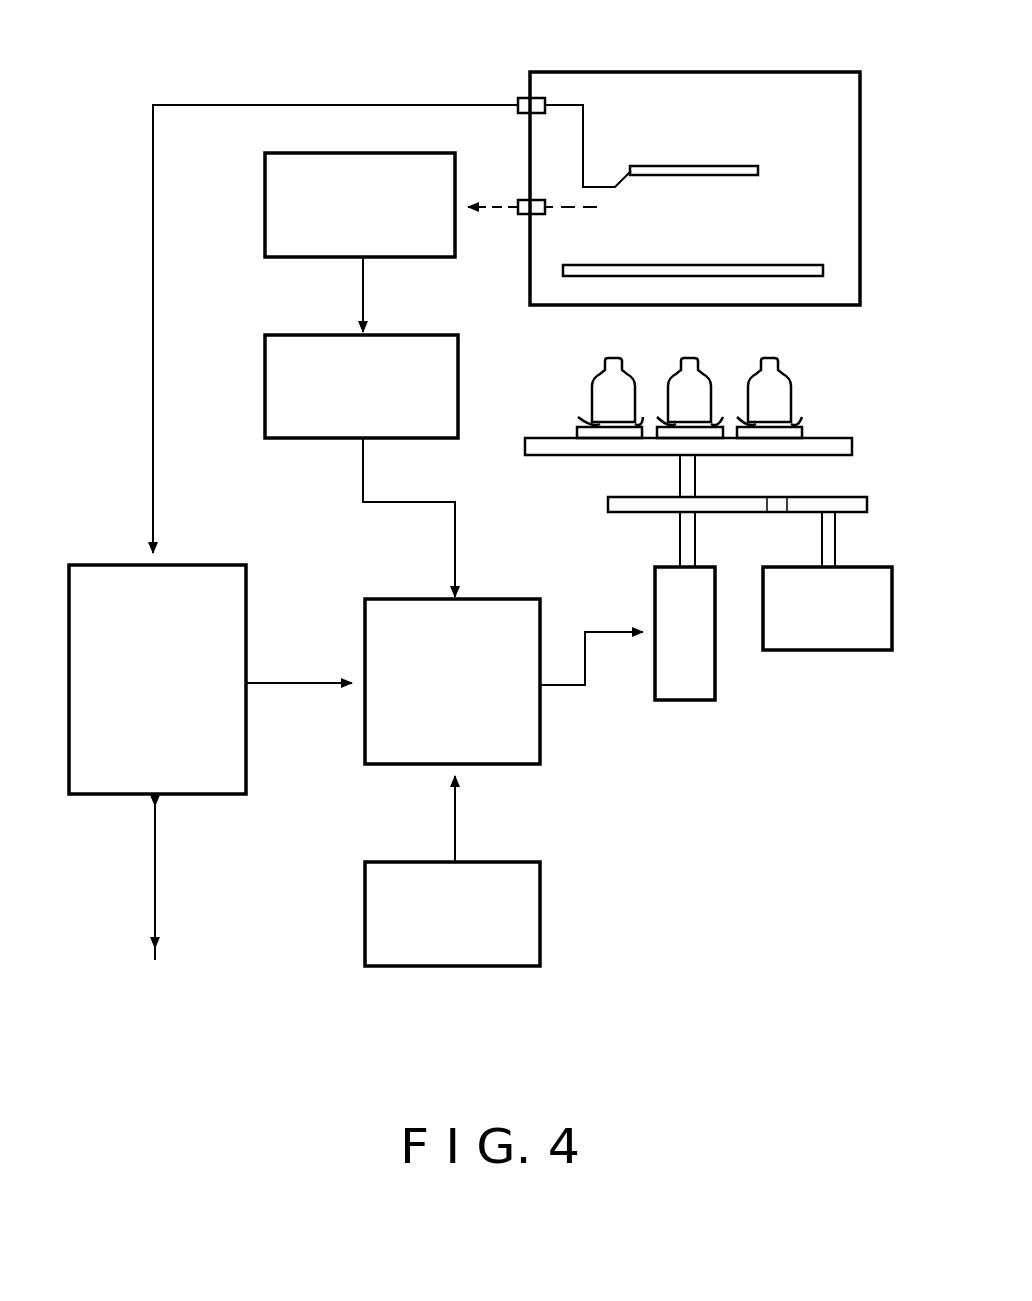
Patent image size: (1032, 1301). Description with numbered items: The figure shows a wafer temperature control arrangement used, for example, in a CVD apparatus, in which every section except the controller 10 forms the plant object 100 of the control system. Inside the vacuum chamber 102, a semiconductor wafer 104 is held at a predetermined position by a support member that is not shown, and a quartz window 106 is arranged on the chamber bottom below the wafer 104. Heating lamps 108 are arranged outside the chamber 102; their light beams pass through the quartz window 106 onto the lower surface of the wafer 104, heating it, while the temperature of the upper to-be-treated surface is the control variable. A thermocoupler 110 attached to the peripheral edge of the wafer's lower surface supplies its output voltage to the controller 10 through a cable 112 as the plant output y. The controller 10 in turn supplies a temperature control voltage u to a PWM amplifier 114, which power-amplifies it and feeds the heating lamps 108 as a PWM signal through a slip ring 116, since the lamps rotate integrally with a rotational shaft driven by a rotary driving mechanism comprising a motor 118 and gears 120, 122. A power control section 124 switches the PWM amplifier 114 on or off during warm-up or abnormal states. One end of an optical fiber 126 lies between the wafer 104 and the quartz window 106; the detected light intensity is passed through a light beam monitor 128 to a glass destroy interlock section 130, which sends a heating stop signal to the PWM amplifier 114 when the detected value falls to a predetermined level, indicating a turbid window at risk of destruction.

The plant object 100 is at (446, 68).
The chamber 102 is at (808, 71).
The semiconductor wafer 104 is at (746, 164).
The quartz window 106 is at (769, 264).
The heating lamps 108 is at (800, 378).
The thermocoupler 110 is at (619, 178).
The cable 112 is at (320, 103).
The PWM amplifier 114 is at (498, 598).
The slip ring 116 is at (715, 656).
The motor 118 is at (860, 567).
The gear 120 is at (840, 497).
The gear 122 is at (608, 505).
The power control section 124 is at (542, 922).
The optical fiber 126 is at (510, 210).
The light beam monitor 128 is at (265, 200).
The glass destroy interlock section 130 is at (265, 388).
The controller 10 is at (205, 565).